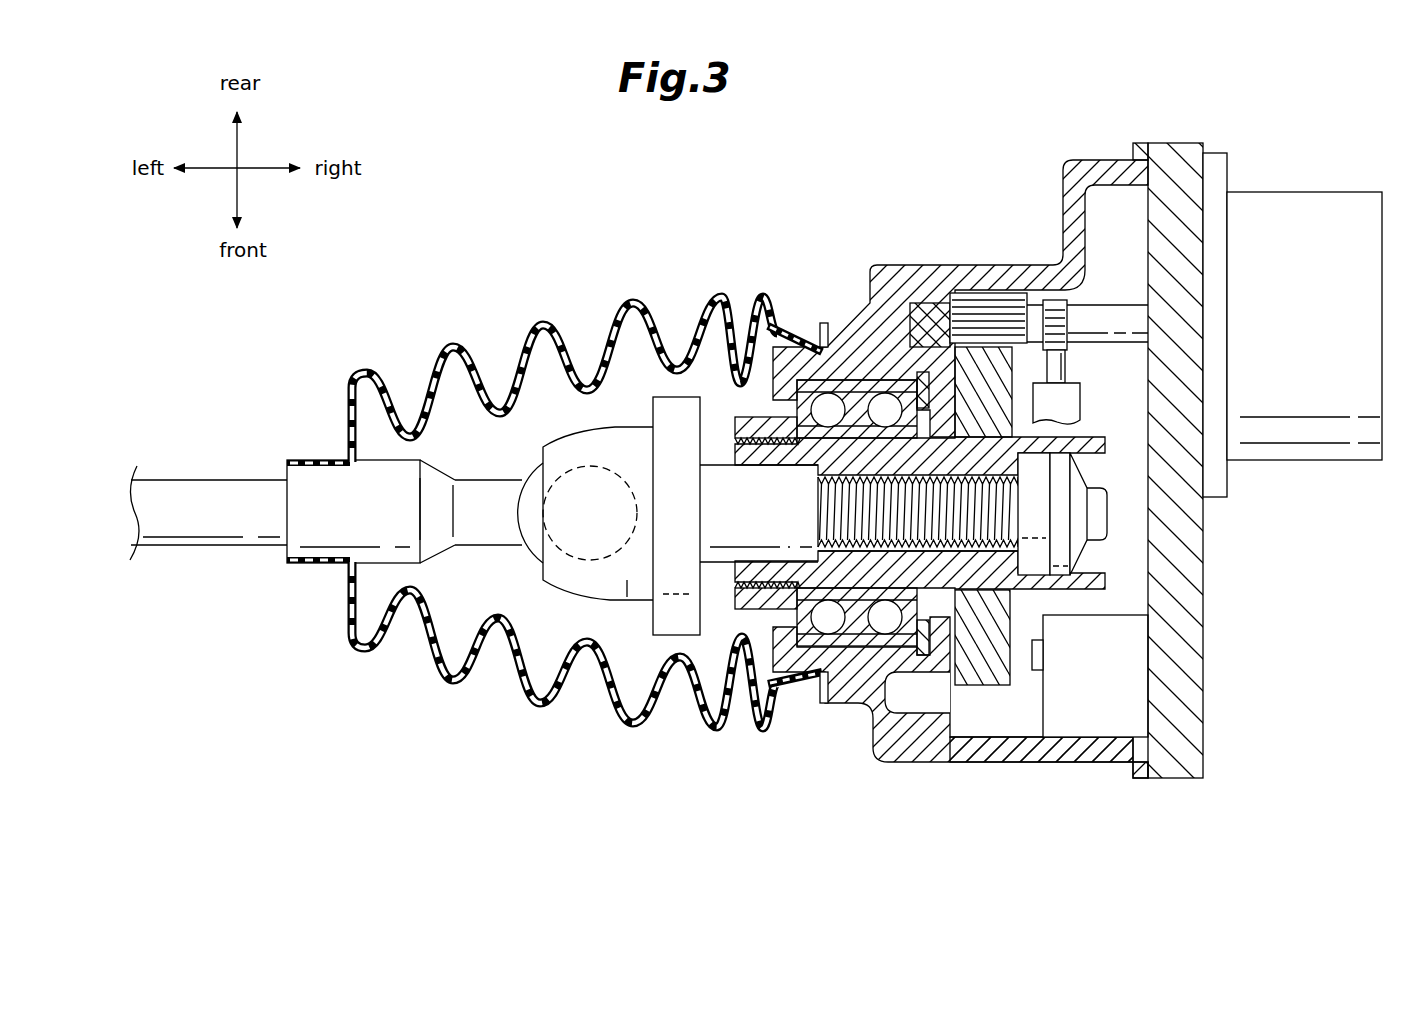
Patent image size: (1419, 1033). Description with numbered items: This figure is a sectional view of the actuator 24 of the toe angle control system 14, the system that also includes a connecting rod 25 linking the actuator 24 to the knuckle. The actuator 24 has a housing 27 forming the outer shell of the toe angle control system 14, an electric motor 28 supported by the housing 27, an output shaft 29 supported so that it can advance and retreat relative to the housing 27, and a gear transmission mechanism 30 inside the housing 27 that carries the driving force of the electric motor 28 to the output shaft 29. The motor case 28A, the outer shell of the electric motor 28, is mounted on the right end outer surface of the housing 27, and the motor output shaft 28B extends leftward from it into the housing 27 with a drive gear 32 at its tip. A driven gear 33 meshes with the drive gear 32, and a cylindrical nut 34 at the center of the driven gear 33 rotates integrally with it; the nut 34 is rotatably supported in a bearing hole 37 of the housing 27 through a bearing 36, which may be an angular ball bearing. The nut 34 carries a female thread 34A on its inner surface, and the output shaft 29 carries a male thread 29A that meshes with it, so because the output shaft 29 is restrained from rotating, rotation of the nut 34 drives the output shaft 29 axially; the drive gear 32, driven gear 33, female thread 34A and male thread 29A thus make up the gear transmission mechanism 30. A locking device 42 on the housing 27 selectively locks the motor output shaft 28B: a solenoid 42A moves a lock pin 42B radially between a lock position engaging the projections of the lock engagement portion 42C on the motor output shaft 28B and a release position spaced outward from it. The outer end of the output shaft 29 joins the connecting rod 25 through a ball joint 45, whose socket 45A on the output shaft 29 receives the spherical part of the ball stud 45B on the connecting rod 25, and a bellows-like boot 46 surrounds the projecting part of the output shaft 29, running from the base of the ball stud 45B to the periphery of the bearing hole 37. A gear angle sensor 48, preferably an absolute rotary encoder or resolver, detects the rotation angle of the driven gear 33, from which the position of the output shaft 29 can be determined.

The toe angle control system 14 is at (762, 158).
The actuator 24 is at (891, 212).
The connecting rod 25 is at (204, 492).
The housing 27 is at (1047, 757).
The electric motor 28 is at (1263, 155).
The motor case 28A is at (1325, 205).
The motor output shaft 28B is at (1110, 313).
The output shaft 29 is at (722, 470).
The male thread 29A is at (862, 548).
The gear transmission mechanism 30 is at (1103, 557).
The drive gear 32 is at (980, 310).
The driven gear 33 is at (990, 676).
The nut 34 is at (1100, 582).
The female thread 34A is at (945, 555).
The bearing 36 is at (820, 395).
The bearing hole 37 is at (850, 383).
The locking device 42 is at (1108, 410).
The solenoid 42A is at (1067, 393).
The lock pin 42B is at (1055, 365).
The lock engagement portion 42C is at (1052, 312).
The ball joint 45 is at (543, 605).
The socket 45A is at (625, 582).
The ball stud 45B is at (487, 527).
The boot 46 is at (462, 345).
The gear angle sensor 48 is at (1097, 722).